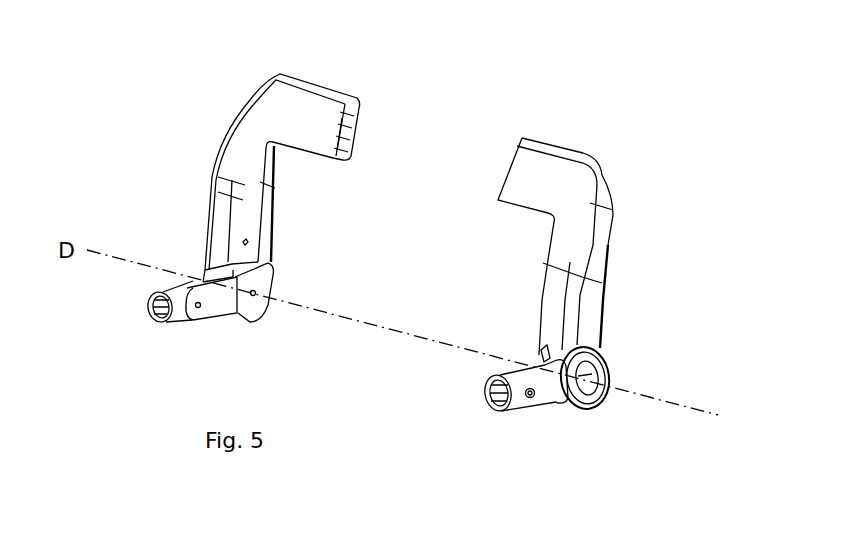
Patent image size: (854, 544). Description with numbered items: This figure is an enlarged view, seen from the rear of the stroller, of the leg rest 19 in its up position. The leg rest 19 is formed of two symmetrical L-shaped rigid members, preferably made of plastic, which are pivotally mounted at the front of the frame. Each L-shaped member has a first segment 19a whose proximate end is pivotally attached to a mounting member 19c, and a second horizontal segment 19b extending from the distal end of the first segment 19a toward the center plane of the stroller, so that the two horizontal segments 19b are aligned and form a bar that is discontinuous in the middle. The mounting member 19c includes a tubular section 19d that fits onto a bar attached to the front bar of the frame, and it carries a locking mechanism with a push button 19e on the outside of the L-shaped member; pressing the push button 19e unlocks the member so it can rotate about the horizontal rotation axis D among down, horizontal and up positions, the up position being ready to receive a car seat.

The leg rest 19 is at (520, 177).
The first segment 19a is at (590, 285).
The second horizontal segment 19b is at (548, 173).
The mounting member 19c is at (547, 377).
The tubular section 19d is at (488, 392).
The push button 19e is at (604, 370).